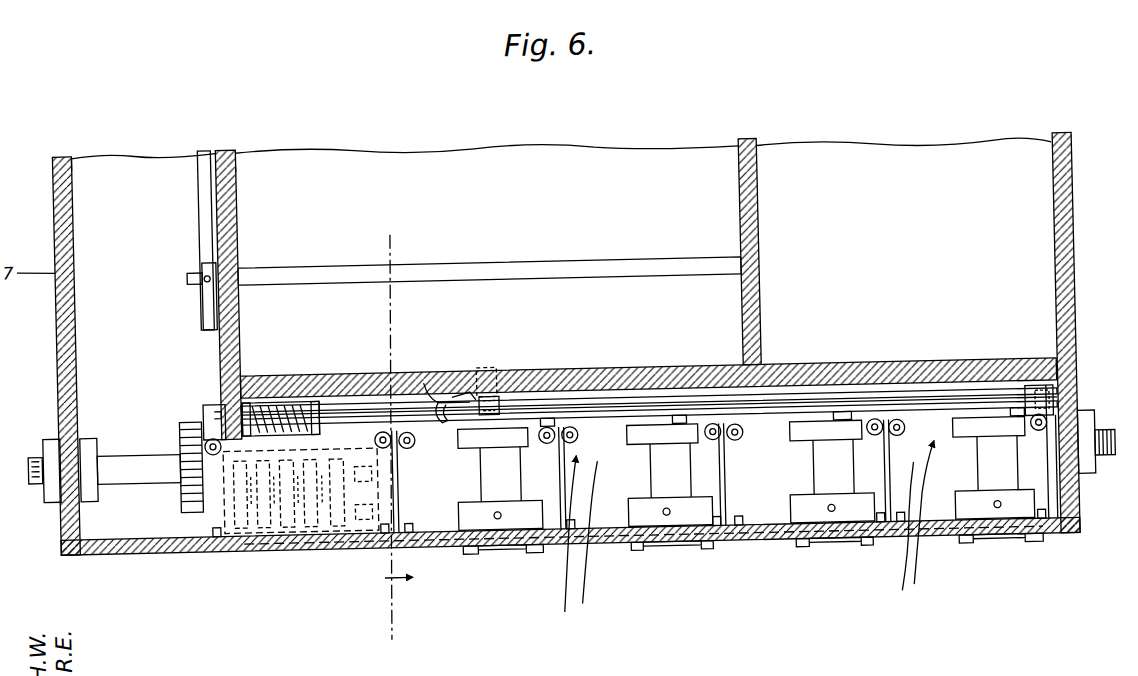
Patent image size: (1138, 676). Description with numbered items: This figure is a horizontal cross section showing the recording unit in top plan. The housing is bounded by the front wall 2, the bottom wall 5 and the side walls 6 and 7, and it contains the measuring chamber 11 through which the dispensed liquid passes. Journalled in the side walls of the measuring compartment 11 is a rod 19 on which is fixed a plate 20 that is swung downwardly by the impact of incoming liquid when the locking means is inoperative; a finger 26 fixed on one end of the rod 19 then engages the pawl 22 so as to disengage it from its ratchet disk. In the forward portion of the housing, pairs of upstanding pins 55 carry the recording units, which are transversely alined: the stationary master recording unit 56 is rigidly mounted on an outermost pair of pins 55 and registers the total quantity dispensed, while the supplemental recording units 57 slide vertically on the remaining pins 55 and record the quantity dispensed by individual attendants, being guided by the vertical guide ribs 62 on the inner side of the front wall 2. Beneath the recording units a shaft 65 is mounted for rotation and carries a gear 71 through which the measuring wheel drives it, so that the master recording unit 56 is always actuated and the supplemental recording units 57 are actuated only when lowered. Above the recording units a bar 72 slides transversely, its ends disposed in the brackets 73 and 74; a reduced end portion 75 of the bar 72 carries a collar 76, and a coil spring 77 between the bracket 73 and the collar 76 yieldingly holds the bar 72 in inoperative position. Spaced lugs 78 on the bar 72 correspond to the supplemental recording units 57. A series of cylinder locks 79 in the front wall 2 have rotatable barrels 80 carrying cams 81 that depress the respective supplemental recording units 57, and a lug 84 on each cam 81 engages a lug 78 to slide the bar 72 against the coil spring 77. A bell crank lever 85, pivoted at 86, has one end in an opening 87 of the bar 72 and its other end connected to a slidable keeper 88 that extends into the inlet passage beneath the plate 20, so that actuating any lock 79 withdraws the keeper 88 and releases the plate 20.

The front wall 2 is at (56, 177).
The bottom wall 5 is at (135, 166).
The side wall 6 is at (1070, 247).
The side wall 7 is at (395, 428).
The measuring chamber 11 is at (583, 168).
The rod 19 is at (298, 258).
The plate 20 is at (333, 300).
The pawl 22 is at (203, 209).
The finger 26 is at (205, 299).
The upstanding pins 55 is at (1047, 431).
The master recording unit 56 is at (300, 522).
The supplemental recording units 57 is at (747, 529).
The guide ribs 62 is at (213, 531).
The shaft 65 is at (118, 448).
The gear 71 is at (187, 414).
The bar 72 is at (800, 382).
The bracket 73 is at (258, 395).
The bracket 74 is at (1030, 396).
The reduced end portion 75 is at (288, 396).
The collar 76 is at (330, 399).
The coil spring 77 is at (312, 396).
The lugs 78 is at (544, 395).
The cylinder locks 79 is at (466, 506).
The rotatable barrels 80 is at (482, 470).
The cams 81 is at (460, 437).
The lug 84 is at (628, 354).
The bell crank lever 85 is at (452, 393).
The pivot 86 is at (478, 393).
The opening 87 is at (424, 380).
The keeper 88 is at (498, 366).